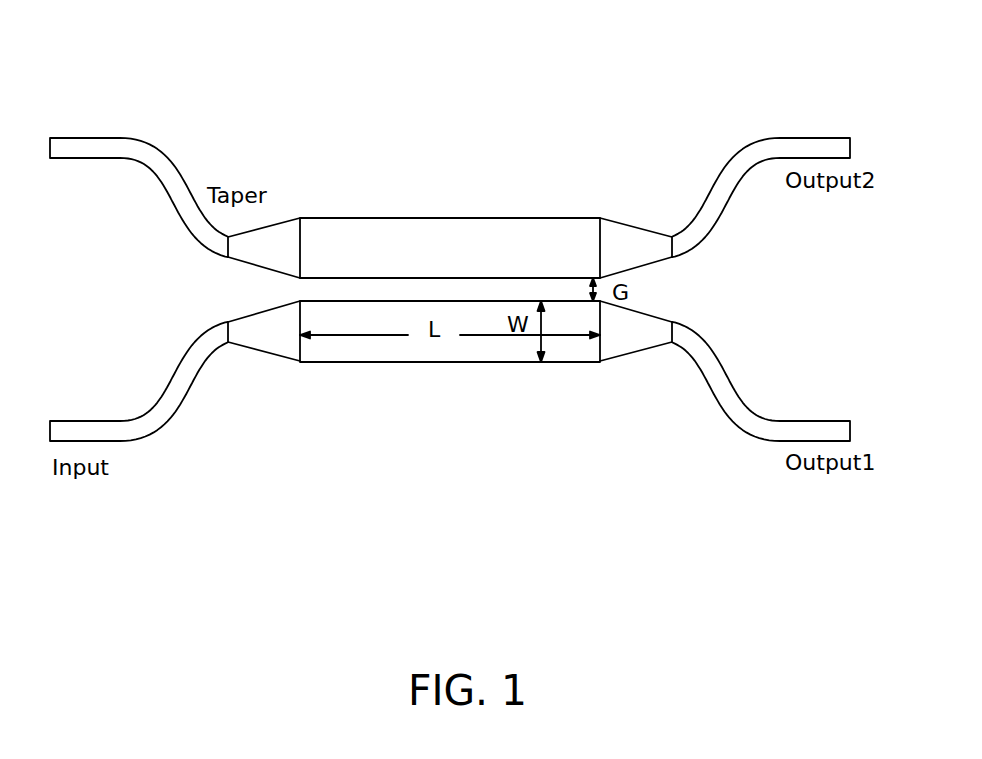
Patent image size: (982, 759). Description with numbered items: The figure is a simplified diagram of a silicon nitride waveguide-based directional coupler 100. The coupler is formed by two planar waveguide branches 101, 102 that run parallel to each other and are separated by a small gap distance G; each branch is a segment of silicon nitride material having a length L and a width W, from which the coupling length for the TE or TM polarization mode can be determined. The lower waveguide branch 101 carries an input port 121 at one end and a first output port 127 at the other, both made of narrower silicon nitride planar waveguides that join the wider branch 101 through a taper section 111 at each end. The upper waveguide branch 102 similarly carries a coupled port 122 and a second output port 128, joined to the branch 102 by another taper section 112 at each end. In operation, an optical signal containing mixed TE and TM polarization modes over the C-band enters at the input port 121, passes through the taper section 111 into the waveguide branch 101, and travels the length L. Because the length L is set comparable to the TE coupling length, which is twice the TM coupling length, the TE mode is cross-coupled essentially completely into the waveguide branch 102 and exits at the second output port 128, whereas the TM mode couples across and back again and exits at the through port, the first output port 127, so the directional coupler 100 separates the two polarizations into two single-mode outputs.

The directional coupler 100 is at (345, 108).
The waveguide branch 101 is at (420, 362).
The waveguide branch 102 is at (460, 218).
The taper section 111 is at (253, 347).
The taper section 112 is at (283, 222).
The input port 121 is at (80, 420).
The coupled port 122 is at (82, 138).
The first output port 127 is at (812, 420).
The second output port 128 is at (812, 138).